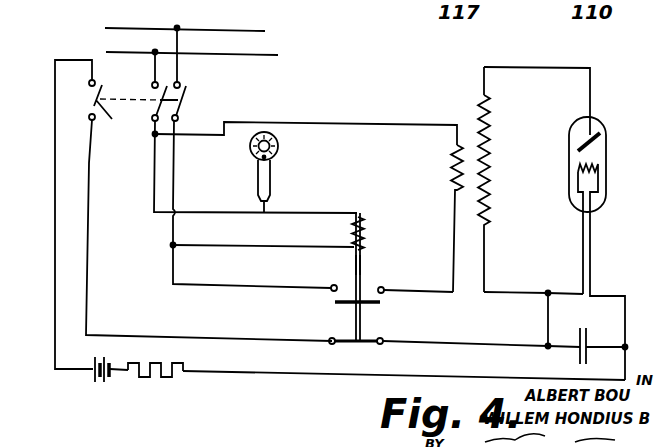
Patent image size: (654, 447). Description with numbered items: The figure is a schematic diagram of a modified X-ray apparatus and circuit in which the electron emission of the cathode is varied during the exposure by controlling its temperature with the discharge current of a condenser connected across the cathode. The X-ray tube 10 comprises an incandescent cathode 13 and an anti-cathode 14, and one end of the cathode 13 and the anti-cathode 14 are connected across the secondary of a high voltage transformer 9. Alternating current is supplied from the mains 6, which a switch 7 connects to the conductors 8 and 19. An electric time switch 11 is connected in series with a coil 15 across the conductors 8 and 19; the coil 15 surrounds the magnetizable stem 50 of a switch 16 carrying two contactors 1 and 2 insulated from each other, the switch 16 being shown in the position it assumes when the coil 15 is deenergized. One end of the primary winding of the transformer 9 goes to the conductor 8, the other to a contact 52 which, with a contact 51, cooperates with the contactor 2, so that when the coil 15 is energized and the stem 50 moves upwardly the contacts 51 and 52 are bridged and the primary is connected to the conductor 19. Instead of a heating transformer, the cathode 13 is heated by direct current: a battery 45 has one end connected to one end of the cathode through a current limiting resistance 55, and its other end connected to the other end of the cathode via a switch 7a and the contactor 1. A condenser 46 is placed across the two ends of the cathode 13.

The contactor 1 is at (368, 344).
The contactor 2 is at (362, 303).
The mains 6 is at (222, 40).
The switch 7 is at (167, 108).
The switch 7a is at (114, 108).
The conductor 8 is at (58, 163).
The high voltage transformer 9 is at (468, 146).
The X-ray tube 10 is at (607, 162).
The electric time switch 11 is at (279, 148).
The incandescent cathode 13 is at (592, 176).
The anti-cathode 14 is at (605, 140).
The coil 15 is at (365, 227).
The switch 16 is at (362, 267).
The conductor 19 is at (91, 163).
The battery 45 is at (96, 381).
The condenser 46 is at (592, 338).
The magnetizable stem 50 is at (364, 213).
The contact 51 is at (328, 278).
The contact 52 is at (415, 280).
The current limiting resistance 55 is at (160, 380).